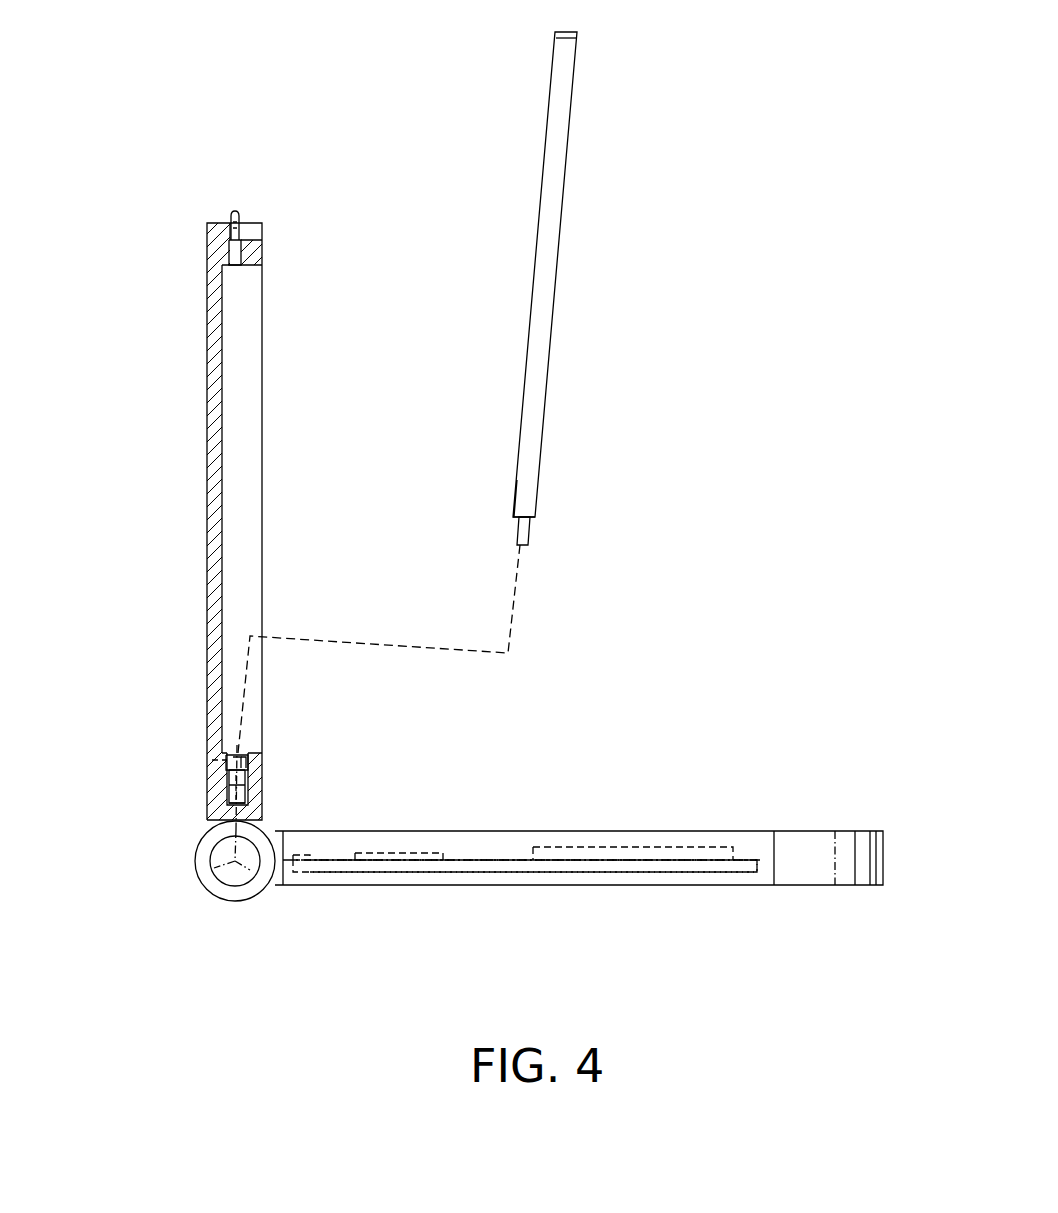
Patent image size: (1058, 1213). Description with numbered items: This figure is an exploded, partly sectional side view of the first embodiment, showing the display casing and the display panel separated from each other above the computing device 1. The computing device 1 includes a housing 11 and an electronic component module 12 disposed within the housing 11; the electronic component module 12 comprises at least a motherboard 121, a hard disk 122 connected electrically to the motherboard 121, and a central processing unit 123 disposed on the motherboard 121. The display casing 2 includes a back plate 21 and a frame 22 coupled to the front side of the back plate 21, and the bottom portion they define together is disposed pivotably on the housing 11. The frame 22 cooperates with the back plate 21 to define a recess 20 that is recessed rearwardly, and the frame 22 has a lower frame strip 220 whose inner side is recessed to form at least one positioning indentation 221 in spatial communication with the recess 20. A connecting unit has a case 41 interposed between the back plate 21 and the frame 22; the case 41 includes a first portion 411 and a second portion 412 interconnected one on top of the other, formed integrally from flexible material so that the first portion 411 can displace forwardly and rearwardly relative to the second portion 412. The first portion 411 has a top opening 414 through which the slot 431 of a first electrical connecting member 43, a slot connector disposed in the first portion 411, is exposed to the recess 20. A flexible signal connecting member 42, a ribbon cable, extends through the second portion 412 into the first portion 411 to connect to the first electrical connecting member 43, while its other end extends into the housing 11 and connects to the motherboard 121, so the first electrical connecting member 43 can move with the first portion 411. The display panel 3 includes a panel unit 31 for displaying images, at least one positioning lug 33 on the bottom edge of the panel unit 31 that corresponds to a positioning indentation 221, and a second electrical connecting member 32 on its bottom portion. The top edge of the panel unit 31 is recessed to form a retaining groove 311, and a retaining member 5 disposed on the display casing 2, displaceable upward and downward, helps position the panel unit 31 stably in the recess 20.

The computing device 1 is at (579, 790).
The housing 11 is at (755, 830).
The electronic component module 12 is at (572, 828).
The motherboard 121 is at (494, 860).
The hard disk 122 is at (632, 845).
The central processing unit 123 is at (406, 852).
The display casing 2 is at (204, 283).
The recess 20 is at (248, 369).
The back plate 21 is at (213, 323).
The frame 22 is at (255, 256).
The lower frame strip 220 is at (258, 781).
The positioning indentation 221 is at (250, 760).
The display panel 3 is at (449, 378).
The panel unit 31 is at (548, 316).
The retaining groove 311 is at (568, 33).
The second electrical connecting member 32 is at (518, 522).
The positioning lug 33 is at (532, 540).
The case 41 is at (233, 748).
The first portion 411 is at (228, 762).
The second portion 412 is at (214, 810).
The top opening 414 is at (244, 748).
The flexible signal connecting member 42 is at (238, 866).
The first electrical connecting member 43 is at (212, 775).
The slot 431 is at (212, 761).
The retaining member 5 is at (230, 205).